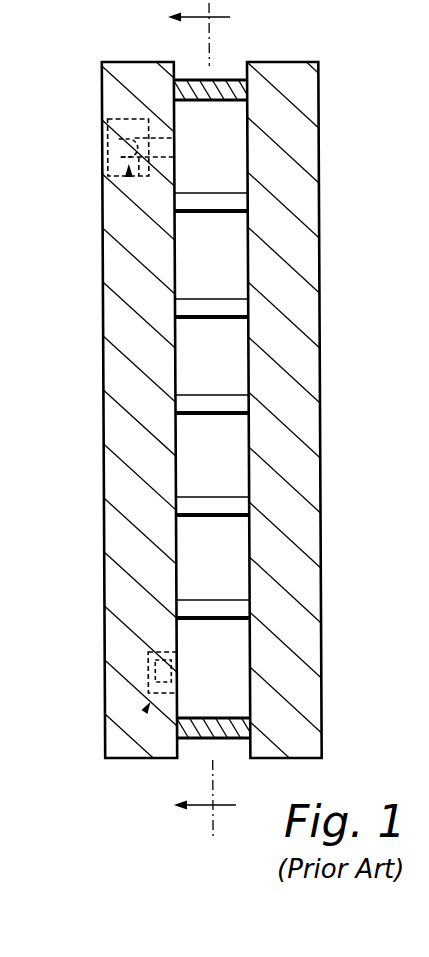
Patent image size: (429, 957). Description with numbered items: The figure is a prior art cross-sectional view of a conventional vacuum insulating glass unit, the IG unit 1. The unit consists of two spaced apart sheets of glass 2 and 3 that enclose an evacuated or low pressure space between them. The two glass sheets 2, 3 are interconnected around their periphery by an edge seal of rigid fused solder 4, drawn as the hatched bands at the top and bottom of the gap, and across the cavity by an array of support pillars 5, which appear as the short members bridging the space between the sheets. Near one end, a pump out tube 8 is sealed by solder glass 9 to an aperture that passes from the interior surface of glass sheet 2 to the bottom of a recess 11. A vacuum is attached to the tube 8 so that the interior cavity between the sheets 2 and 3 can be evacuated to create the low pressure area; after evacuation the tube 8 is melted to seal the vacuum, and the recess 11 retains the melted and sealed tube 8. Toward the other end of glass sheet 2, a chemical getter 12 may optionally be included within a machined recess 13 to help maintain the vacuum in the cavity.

The IG unit 1 is at (333, 182).
The sheet of glass 2 is at (115, 479).
The sheet of glass 3 is at (289, 304).
The edge seal of rigid fused solder 4 is at (218, 90).
The support pillars 5 is at (210, 403).
The pump out tube 8 is at (113, 148).
The solder glass 9 is at (141, 126).
The recess 11 is at (128, 172).
The chemical getter 12 is at (158, 668).
The machined recess 13 is at (144, 706).